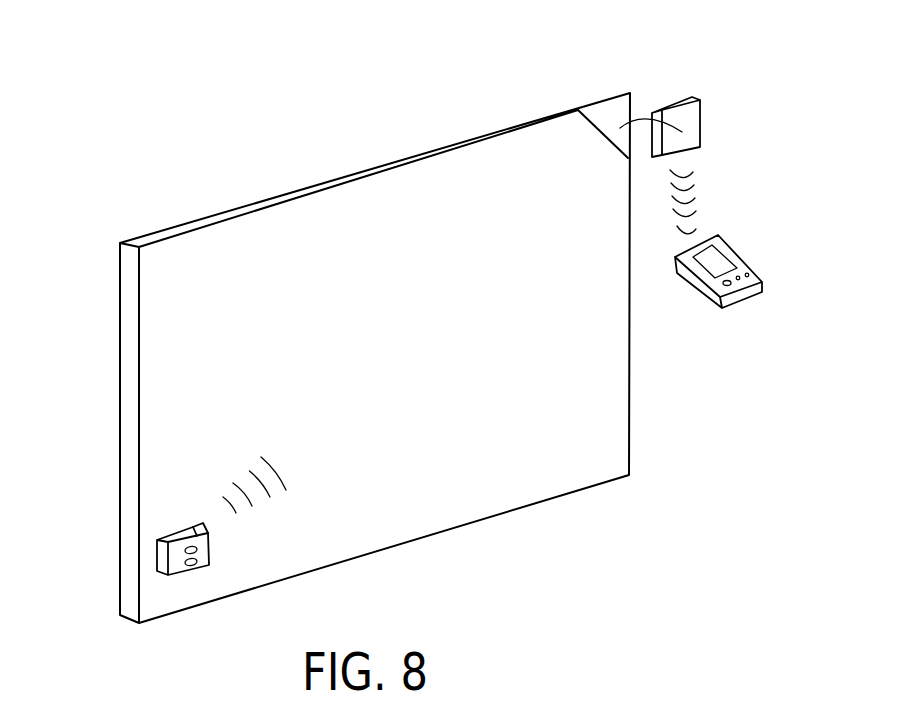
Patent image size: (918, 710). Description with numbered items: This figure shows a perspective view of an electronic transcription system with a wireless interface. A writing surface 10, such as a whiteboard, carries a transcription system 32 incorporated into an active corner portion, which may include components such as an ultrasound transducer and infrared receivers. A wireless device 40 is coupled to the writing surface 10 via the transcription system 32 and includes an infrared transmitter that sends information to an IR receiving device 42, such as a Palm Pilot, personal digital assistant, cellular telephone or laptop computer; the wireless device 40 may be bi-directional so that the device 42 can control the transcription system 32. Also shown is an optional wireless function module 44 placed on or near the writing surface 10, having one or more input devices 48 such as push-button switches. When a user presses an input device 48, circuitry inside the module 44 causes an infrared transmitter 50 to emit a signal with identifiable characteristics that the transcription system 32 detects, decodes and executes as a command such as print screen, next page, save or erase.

The writing surface 10 is at (167, 435).
The transcription system 32 is at (597, 95).
The wireless device 40 is at (700, 118).
The IR receiving device 42 is at (750, 258).
The wireless function module 44 is at (160, 557).
The input device 48 is at (208, 535).
The infrared transmitter 50 is at (203, 523).